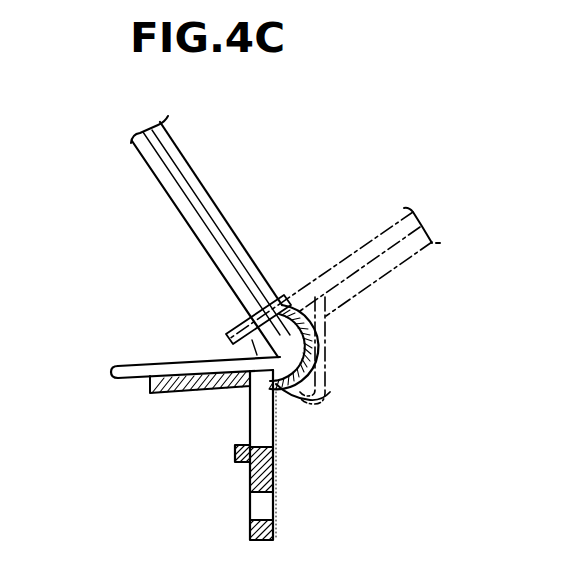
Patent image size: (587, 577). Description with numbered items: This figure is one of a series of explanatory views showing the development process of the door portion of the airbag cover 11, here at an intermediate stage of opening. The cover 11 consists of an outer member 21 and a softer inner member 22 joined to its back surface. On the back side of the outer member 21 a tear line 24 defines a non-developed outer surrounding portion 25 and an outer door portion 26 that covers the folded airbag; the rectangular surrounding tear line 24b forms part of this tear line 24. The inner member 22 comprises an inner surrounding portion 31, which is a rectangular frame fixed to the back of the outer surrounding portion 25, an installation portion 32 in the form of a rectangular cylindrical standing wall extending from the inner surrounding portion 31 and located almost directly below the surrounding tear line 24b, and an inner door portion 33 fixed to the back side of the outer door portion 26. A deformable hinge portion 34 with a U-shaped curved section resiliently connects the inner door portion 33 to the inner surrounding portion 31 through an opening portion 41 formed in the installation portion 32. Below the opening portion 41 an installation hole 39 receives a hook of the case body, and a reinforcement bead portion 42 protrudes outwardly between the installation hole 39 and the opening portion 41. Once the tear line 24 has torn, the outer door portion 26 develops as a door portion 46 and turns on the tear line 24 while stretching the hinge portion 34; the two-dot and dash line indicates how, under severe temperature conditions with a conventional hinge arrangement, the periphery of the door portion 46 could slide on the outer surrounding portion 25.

The cover 11 is at (96, 156).
The outer member 21 is at (120, 377).
The inner member 22 is at (148, 392).
The tear line 24 is at (325, 357).
The surrounding tear line 24b is at (330, 383).
The outer surrounding portion 25 is at (178, 357).
The outer door portion 26 is at (190, 226).
The inner surrounding portion 31 is at (182, 387).
The installation portion 32 is at (270, 478).
The inner door portion 33 is at (206, 190).
The hinge portion 34 is at (292, 390).
The installation hole 39 is at (252, 505).
The opening portion 41 is at (251, 412).
The reinforcement bead portion 42 is at (237, 458).
The door portion 46 is at (170, 198).